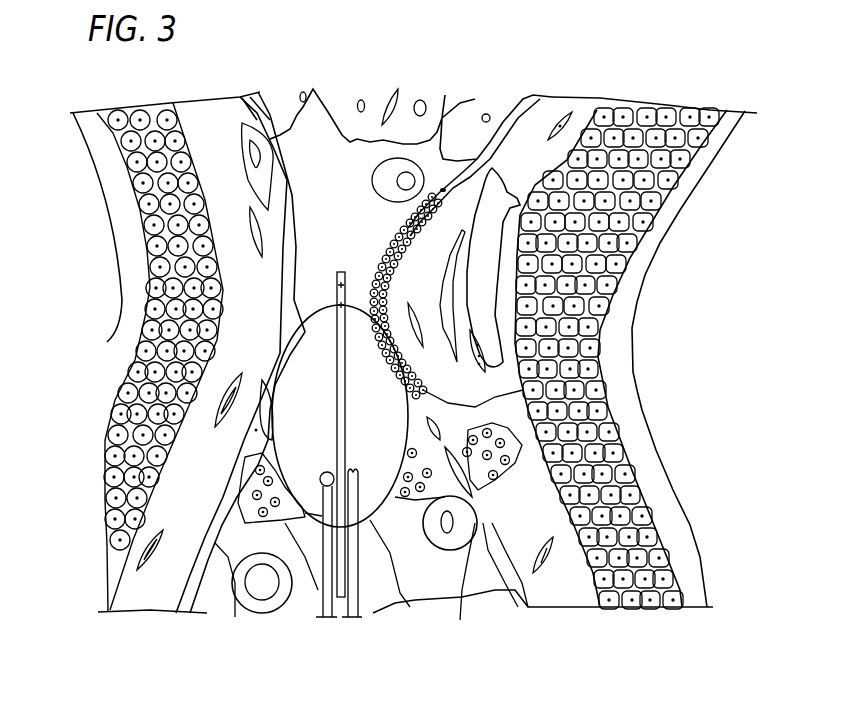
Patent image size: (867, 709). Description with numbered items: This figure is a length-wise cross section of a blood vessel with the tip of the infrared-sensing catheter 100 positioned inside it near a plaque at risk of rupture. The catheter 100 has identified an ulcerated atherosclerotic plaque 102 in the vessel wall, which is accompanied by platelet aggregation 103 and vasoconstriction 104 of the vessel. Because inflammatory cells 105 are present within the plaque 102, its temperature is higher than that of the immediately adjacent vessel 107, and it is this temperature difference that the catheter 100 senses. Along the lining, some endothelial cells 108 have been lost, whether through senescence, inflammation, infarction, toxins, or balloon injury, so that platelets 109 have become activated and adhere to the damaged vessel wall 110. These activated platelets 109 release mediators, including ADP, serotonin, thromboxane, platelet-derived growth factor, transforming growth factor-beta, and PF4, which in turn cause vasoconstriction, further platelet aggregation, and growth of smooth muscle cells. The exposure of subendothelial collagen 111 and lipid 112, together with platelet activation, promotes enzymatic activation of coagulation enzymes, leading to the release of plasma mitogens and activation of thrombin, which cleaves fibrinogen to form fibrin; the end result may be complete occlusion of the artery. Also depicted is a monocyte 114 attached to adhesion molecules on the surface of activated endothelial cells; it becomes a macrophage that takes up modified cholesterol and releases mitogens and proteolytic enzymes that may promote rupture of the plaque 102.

The infrared-sensing catheter 100 is at (376, 587).
The ulcerated atherosclerotic plaque 102 is at (665, 304).
The platelet aggregation 103 is at (405, 300).
The vasoconstriction 104 is at (303, 218).
The inflammatory cells 105 is at (510, 450).
The immediately adjacent vessel 107 is at (182, 497).
The endothelial cells 108 is at (390, 246).
The platelets 109 is at (447, 405).
The damaged vessel wall 110 is at (515, 363).
The subendothelial collagen 111 is at (500, 222).
The lipid 112 is at (500, 272).
The monocyte 114 is at (462, 522).